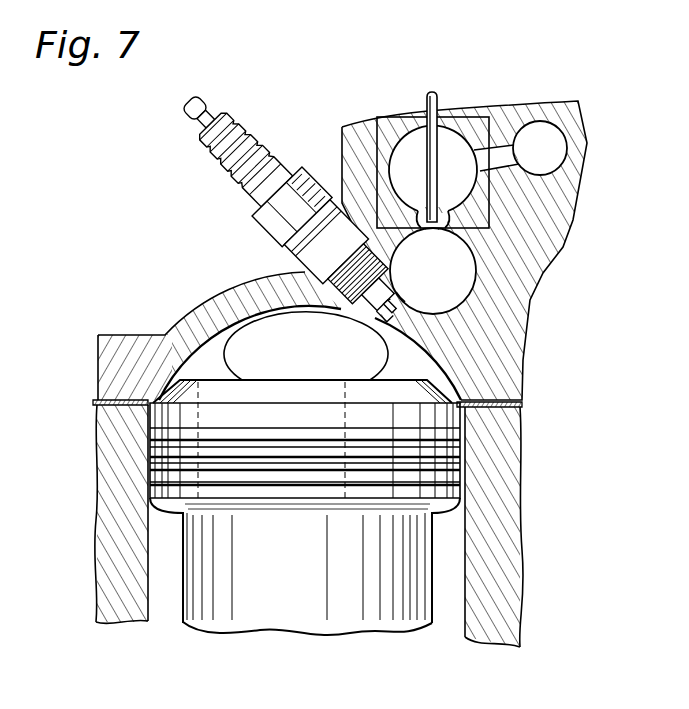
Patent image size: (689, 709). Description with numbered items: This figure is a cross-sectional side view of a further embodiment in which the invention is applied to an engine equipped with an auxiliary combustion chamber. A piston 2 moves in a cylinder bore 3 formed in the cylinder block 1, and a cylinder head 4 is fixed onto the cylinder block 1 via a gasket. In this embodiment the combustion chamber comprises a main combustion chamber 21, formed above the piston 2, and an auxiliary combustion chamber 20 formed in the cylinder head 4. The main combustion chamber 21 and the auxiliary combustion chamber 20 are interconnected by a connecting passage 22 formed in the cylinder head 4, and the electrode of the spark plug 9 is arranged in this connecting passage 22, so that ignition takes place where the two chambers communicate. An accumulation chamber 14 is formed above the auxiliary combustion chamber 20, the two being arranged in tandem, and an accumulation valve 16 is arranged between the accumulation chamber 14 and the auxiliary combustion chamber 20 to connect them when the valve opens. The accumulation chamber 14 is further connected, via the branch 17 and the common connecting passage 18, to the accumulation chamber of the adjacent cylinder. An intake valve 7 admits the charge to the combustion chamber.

The cylinder block 1 is at (487, 613).
The piston 2 is at (390, 623).
The cylinder bore 3 is at (458, 548).
The cylinder head 4 is at (236, 295).
The intake valve 7 is at (250, 368).
The spark plug 9 is at (263, 193).
The accumulation chamber 14 is at (395, 179).
The accumulation valve 16 is at (423, 157).
The branch 17 is at (502, 153).
The common connecting passage 18 is at (555, 138).
The auxiliary combustion chamber 20 is at (431, 268).
The main combustion chamber 21 is at (392, 368).
The connecting passage 22 is at (403, 290).